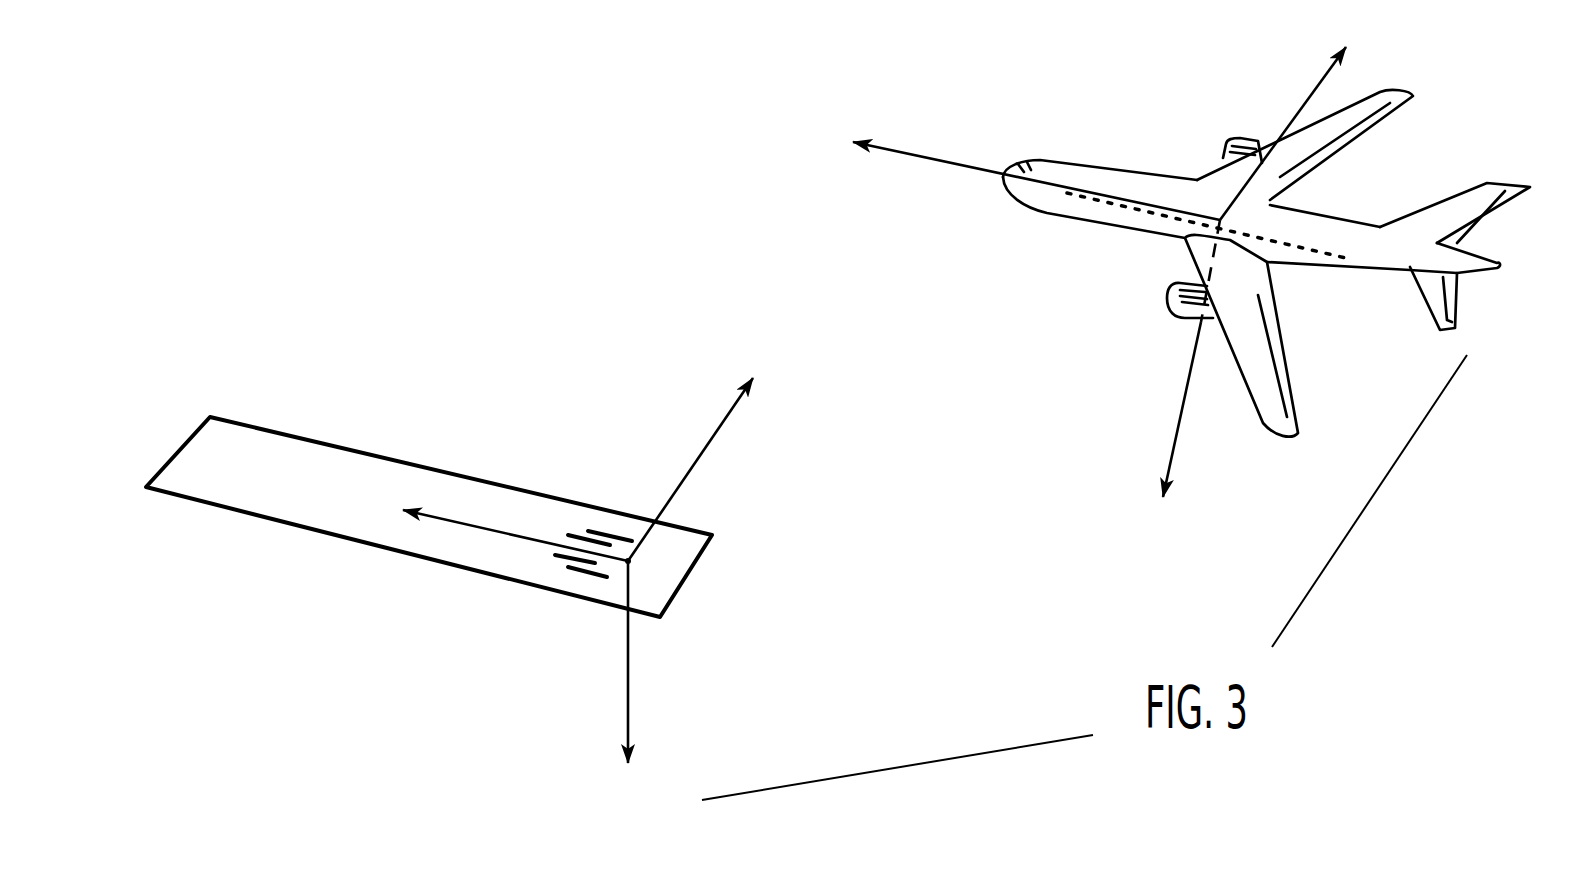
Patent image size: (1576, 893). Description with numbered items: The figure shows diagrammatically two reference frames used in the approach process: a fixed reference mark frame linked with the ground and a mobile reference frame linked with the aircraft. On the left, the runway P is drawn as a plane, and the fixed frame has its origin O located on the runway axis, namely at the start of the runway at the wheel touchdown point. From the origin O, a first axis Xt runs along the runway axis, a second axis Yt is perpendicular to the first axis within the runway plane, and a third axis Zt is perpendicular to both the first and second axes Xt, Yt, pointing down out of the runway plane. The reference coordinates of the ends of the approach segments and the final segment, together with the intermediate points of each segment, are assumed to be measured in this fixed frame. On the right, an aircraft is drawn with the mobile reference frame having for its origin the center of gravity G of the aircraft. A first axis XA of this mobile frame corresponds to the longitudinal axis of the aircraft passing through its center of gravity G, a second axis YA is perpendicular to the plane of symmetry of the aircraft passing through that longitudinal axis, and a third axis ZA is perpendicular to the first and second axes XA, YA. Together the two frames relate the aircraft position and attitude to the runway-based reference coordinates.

The runway P is at (418, 462).
The origin of the fixed reference frame O is at (641, 568).
The first axis of the fixed reference frame Xt is at (489, 527).
The second axis of the fixed reference frame Yt is at (695, 450).
The third axis of the fixed reference frame Zt is at (615, 680).
The center of gravity of the aircraft G is at (1260, 213).
The first axis of the mobile reference frame XA is at (1000, 171).
The second axis of the mobile reference frame YA is at (1283, 129).
The third axis of the mobile reference frame ZA is at (1175, 378).